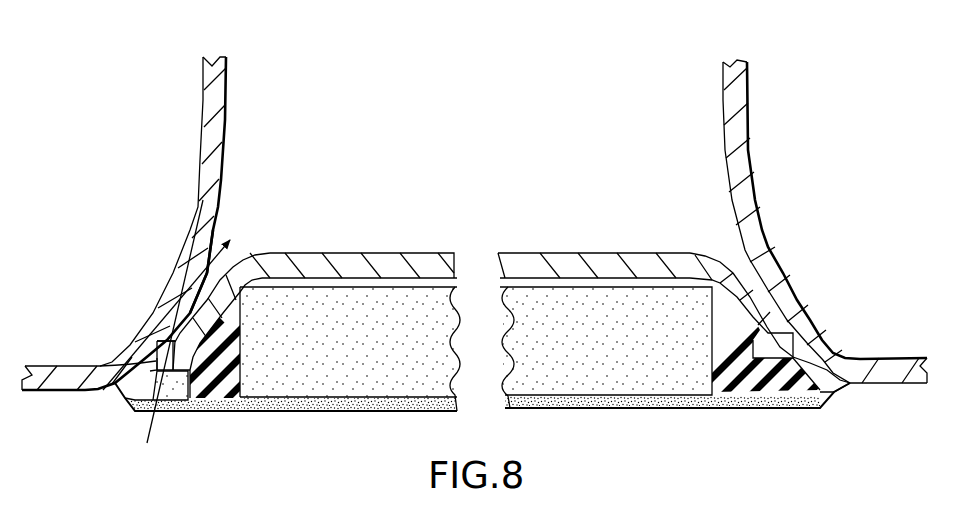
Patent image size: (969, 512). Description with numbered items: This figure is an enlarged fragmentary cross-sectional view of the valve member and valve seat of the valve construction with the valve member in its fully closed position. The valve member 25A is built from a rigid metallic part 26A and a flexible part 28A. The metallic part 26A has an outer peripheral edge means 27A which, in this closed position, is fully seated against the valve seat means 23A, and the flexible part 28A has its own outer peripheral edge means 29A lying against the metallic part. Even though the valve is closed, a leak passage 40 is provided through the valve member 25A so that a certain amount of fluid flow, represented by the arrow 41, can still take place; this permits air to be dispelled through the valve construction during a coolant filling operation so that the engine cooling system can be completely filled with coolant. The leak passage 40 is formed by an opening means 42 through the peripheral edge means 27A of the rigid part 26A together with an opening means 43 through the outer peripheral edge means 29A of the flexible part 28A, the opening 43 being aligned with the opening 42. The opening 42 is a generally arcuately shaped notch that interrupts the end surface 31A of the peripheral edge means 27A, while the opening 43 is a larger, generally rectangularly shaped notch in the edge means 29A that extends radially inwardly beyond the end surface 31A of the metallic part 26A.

The valve seat means 23A is at (158, 342).
The arrow 41 is at (207, 273).
The metallic part 26A is at (340, 253).
The opening means 42 is at (156, 344).
The end surface 31A is at (156, 361).
The opening means 43 is at (175, 390).
The leak passage 40 is at (140, 378).
The outer peripheral edge means 27A is at (240, 317).
The valve member 25A is at (608, 253).
The flexible part 28A is at (743, 377).
The outer peripheral edge means 29A is at (823, 385).